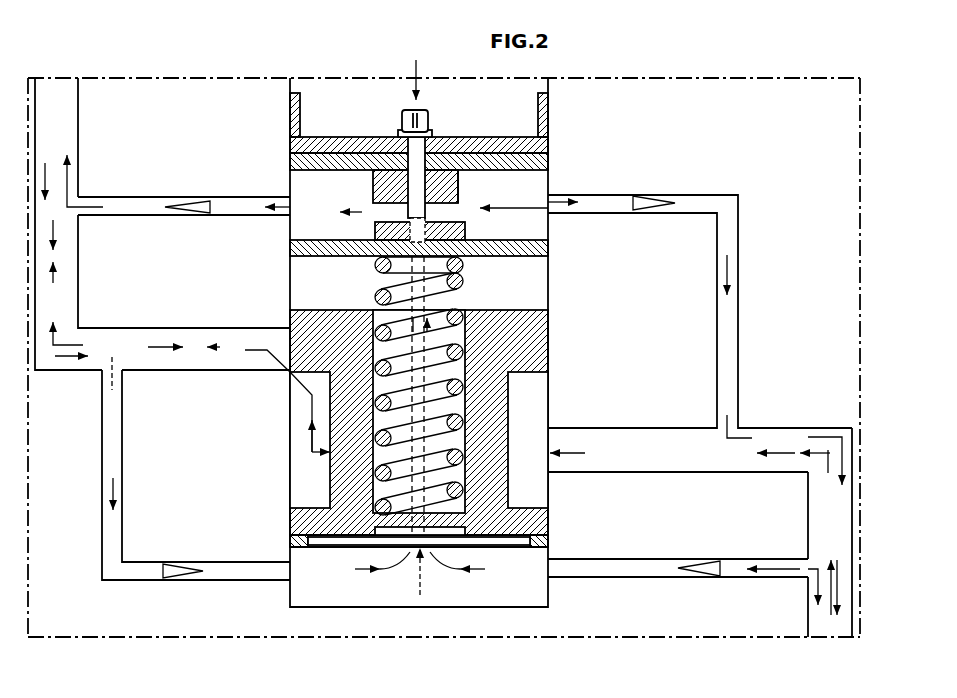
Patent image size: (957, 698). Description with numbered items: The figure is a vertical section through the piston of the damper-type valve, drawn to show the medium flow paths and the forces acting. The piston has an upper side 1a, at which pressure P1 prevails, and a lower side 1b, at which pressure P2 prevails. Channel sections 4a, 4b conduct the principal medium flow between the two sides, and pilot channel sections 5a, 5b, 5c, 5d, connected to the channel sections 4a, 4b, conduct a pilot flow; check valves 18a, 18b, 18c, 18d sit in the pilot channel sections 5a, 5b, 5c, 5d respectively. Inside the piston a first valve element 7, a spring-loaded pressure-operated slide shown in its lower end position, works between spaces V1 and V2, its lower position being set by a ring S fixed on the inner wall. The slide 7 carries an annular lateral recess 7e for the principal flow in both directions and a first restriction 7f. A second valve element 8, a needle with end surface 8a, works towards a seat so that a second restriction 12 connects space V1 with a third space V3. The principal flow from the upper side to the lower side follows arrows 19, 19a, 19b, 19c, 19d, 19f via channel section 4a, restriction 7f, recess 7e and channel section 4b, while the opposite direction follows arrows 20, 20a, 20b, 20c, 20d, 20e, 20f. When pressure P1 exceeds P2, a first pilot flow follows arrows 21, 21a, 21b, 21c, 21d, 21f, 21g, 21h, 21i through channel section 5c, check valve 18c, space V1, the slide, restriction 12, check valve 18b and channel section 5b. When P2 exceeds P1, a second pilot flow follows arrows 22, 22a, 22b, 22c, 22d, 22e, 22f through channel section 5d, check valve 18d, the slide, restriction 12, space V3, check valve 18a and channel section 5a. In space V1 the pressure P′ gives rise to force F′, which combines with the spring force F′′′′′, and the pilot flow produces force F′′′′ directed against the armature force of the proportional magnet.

The upper side of the piston 1a is at (127, 78).
The lower side of the piston 1b is at (478, 640).
The channel section 4a is at (65, 120).
The channel section 4b is at (852, 470).
The channel section 5a is at (148, 205).
The channel section 5b is at (728, 240).
The channel section 5c is at (108, 462).
The channel section 5d is at (610, 570).
The first valve element 7 is at (537, 332).
The annular lateral recess 7e is at (540, 392).
The first restriction 7f is at (290, 372).
The second valve element 8 is at (413, 190).
The end surface of the second valve element 8a is at (462, 205).
The second restriction 12 is at (437, 229).
The check valve 18a is at (200, 200).
The check valve 18b is at (644, 212).
The check valve 18c is at (172, 565).
The check valve 18d is at (706, 568).
The principal flow arrow 19 is at (56, 250).
The principal flow arrow 19a is at (185, 345).
The principal flow arrow 19b is at (326, 455).
The principal flow arrow 19c is at (585, 453).
The principal flow arrow 19d is at (760, 450).
The principal flow arrow 19f is at (840, 610).
The reverse principal flow arrow 20 is at (838, 562).
The reverse principal flow arrow 20a is at (800, 450).
The reverse principal flow arrow 20b is at (520, 440).
The reverse principal flow arrow 20c is at (310, 425).
The reverse principal flow arrow 20d is at (208, 346).
The reverse principal flow arrow 20e is at (55, 332).
The reverse principal flow arrow 20f is at (57, 265).
The first pilot flow arrow 21 is at (47, 198).
The first pilot flow arrow 21a is at (82, 360).
The first pilot flow arrow 21b is at (118, 505).
The first pilot flow arrow 21c is at (380, 571).
The first pilot flow arrow 21d is at (385, 306).
The first pilot flow arrow 21f is at (549, 205).
The first pilot flow arrow 21g is at (570, 204).
The first pilot flow arrow 21h is at (730, 293).
The first pilot flow arrow 21i is at (840, 493).
The second pilot flow arrow 22 is at (815, 607).
The second pilot flow arrow 22a is at (762, 567).
The second pilot flow arrow 22b is at (463, 571).
The second pilot flow arrow 22c is at (460, 305).
The second pilot flow arrow 22d is at (332, 195).
The second pilot flow arrow 22e is at (283, 200).
The second pilot flow arrow 22f is at (70, 160).
The ring S is at (550, 538).
The space V1 is at (542, 277).
The space V2 is at (297, 588).
The third space V3 is at (480, 180).
The pressure P1 is at (190, 59).
The pressure P2 is at (578, 682).
The pressure P′ is at (315, 290).
The force F′ is at (455, 282).
The pilot flow force F′′′′ is at (372, 231).
The spring force F′′′′′ is at (330, 495).